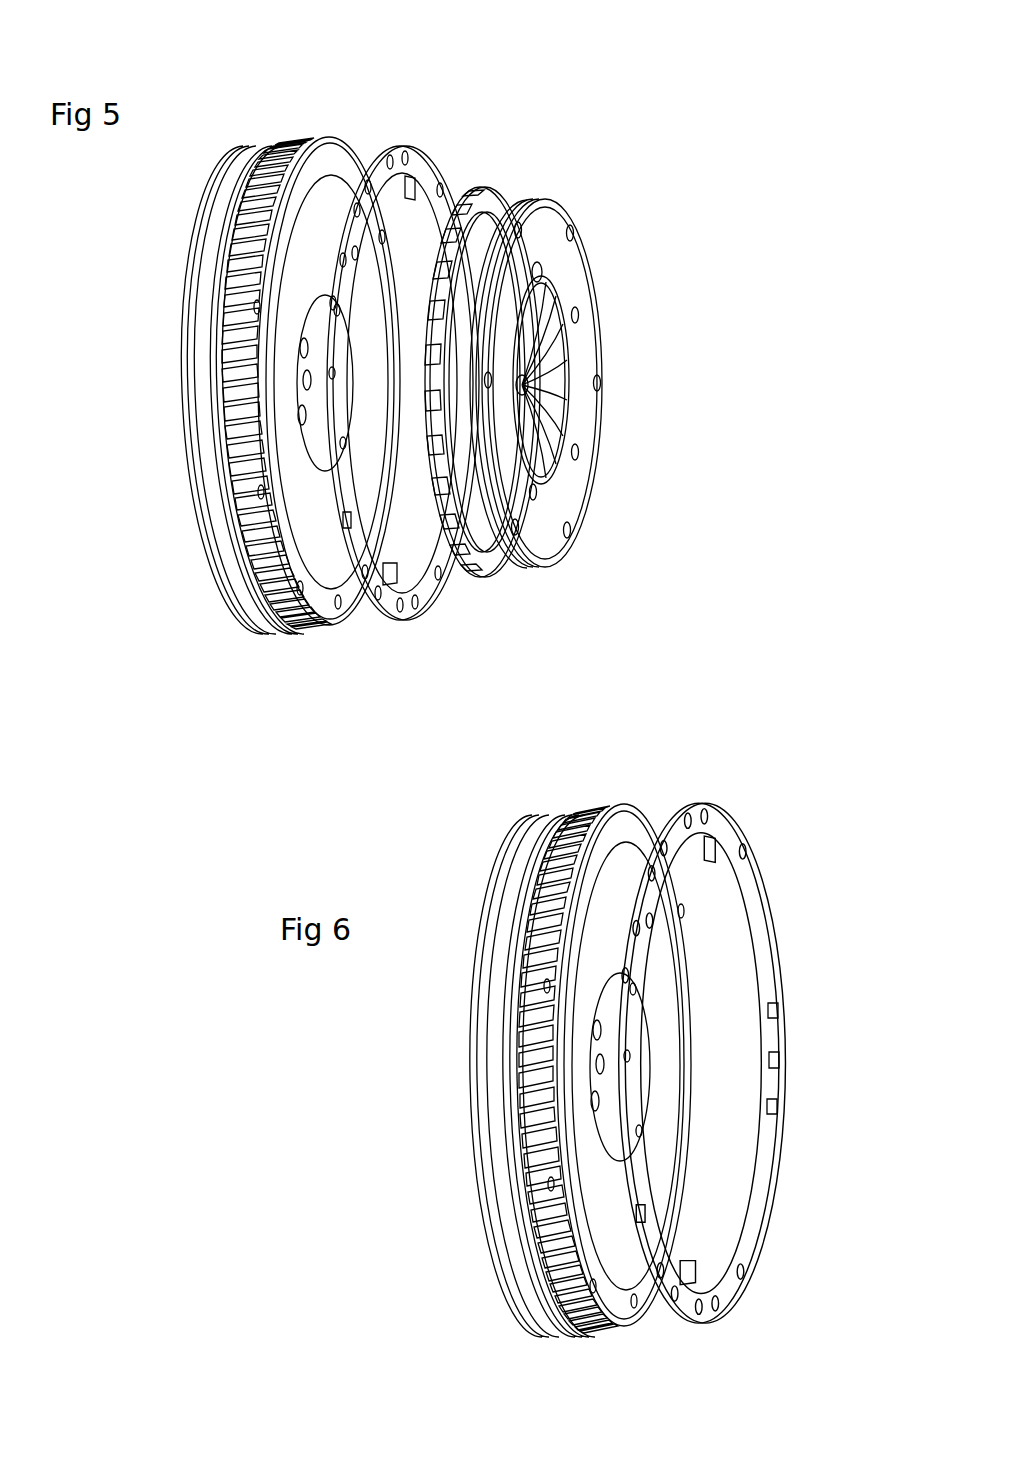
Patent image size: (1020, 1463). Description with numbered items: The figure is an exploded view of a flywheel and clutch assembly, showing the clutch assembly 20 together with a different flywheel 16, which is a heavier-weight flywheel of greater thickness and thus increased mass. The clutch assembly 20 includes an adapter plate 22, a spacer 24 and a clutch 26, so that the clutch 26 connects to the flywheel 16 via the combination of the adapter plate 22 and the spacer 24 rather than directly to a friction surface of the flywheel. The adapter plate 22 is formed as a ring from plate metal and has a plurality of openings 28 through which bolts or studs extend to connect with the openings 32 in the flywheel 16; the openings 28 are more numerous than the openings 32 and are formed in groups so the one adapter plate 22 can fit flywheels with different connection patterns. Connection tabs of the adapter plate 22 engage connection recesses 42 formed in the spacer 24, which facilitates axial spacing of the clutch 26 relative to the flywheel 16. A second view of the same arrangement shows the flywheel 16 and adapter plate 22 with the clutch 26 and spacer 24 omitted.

In FIG. 5, the flywheel 16 is at (212, 315).
In FIG. 6, the flywheel 16 is at (503, 971).
In FIG. 5, the clutch assembly 20 is at (578, 267).
In FIG. 5, the adapter plate 22 is at (421, 160).
In FIG. 6, the adapter plate 22 is at (728, 830).
In FIG. 5, the spacer 24 is at (508, 186).
In FIG. 5, the clutch 26 is at (572, 502).
In FIG. 5, the openings 28 is at (365, 568).
In FIG. 6, the openings 28 is at (773, 1107).
In FIG. 5, the openings 32 is at (257, 307).
In FIG. 6, the openings 32 is at (552, 988).
In FIG. 5, the connection recesses 42 is at (458, 545).